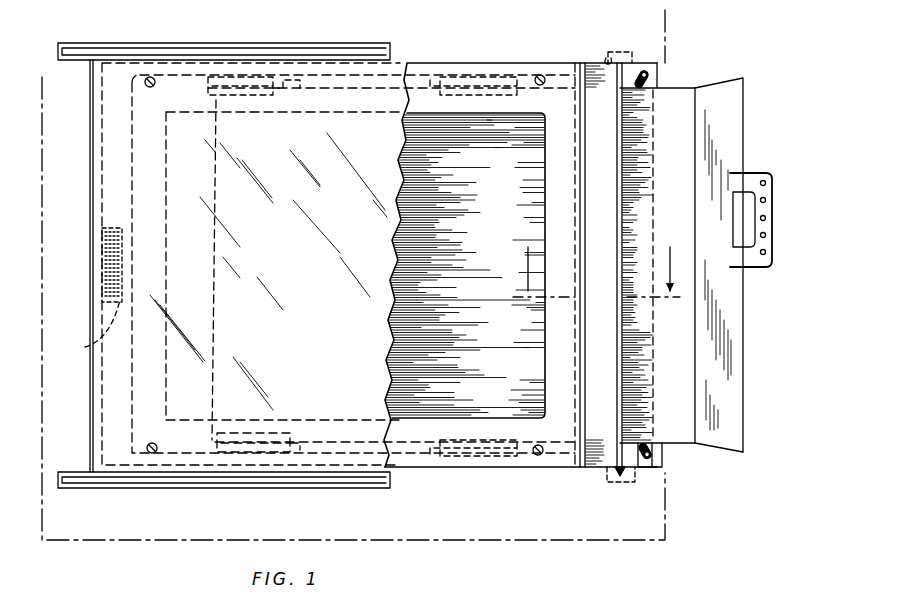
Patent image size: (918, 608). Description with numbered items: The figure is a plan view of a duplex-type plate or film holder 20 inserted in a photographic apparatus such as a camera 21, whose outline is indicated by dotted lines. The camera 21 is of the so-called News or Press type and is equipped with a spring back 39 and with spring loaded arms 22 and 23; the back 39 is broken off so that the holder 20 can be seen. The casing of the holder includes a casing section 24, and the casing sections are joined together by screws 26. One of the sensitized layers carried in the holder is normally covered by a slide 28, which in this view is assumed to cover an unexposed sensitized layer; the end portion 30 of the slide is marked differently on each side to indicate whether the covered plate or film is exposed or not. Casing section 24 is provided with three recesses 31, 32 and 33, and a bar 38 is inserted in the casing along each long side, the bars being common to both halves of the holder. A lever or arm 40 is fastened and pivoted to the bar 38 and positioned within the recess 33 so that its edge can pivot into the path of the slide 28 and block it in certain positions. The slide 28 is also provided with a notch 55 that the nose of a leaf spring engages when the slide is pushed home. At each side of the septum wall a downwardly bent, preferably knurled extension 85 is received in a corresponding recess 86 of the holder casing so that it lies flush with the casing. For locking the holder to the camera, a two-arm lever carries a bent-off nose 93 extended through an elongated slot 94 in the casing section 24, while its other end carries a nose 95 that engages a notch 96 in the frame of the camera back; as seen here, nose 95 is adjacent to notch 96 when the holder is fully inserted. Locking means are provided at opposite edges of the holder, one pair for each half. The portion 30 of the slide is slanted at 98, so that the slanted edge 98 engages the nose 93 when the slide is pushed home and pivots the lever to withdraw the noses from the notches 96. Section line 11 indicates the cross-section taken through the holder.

The section line 11 is at (683, 223).
The plate or film holder 20 is at (519, 56).
The camera 21 is at (556, 551).
The spring loaded arm 22 is at (245, 52).
The spring loaded arm 23 is at (263, 480).
The casing section 24 is at (497, 463).
The screws 26 is at (157, 86).
The slide 28 is at (678, 97).
The end portion of slide 30 is at (733, 130).
The recess 31 is at (213, 100).
The recess 32 is at (210, 440).
The recess 33 is at (456, 93).
The bar 38 is at (432, 78).
The spring back 39 is at (88, 382).
The lever or arm 40 is at (476, 78).
The notch 55 is at (296, 93).
The knurled extension 85 is at (103, 288).
The recess 86 is at (86, 346).
The bent-off nose 93 is at (660, 447).
The elongated slot 94 is at (645, 458).
The nose 95 is at (608, 63).
The notch 96 is at (652, 26).
The slanted edge 98 is at (725, 455).